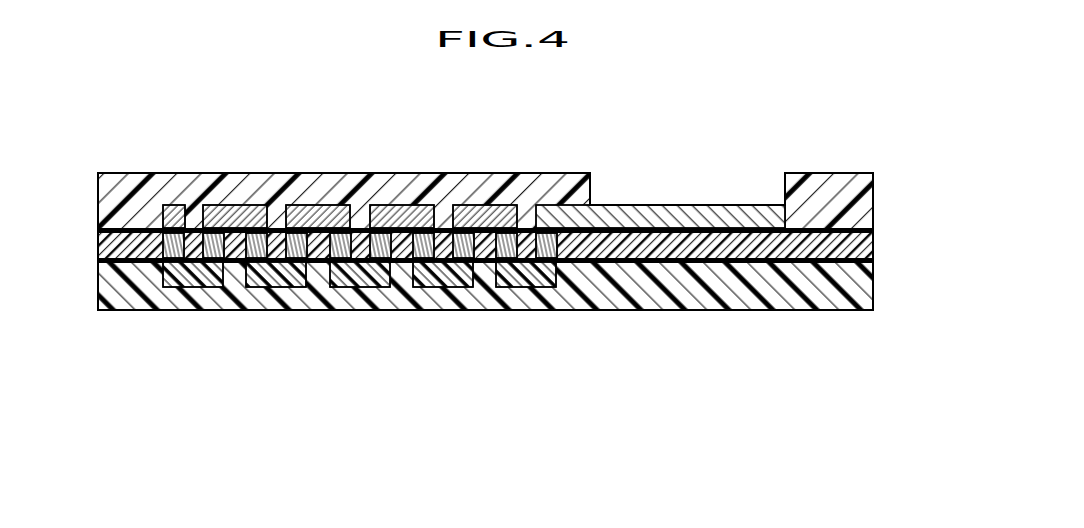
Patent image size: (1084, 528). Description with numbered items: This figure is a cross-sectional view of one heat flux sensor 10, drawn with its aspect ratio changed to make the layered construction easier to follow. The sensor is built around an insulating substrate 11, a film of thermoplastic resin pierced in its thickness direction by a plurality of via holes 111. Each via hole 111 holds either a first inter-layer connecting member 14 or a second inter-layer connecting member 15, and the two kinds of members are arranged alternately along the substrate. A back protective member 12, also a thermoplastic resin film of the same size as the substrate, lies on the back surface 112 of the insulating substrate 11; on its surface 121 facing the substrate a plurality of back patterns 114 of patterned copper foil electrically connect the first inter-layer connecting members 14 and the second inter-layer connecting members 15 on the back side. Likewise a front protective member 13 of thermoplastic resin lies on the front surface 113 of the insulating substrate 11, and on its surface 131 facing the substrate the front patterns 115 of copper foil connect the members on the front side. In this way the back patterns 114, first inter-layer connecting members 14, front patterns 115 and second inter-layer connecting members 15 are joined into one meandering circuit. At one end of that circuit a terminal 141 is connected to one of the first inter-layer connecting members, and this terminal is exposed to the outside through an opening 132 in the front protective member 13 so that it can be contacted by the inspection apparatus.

The heat flux sensor 10 is at (118, 154).
The insulating substrate 11 is at (830, 248).
The back protective member 12 is at (800, 288).
The front protective member 13 is at (827, 186).
The first inter-layer connecting member 14 is at (206, 275).
The second inter-layer connecting member 15 is at (170, 213).
The via hole 111 is at (212, 234).
The back surface 112 is at (650, 292).
The front surface 113 is at (622, 217).
The back pattern 114 is at (204, 287).
The front pattern 115 is at (168, 212).
The surface of back protective member 121 is at (810, 262).
The surface of front protective member 131 is at (830, 231).
The opening 132 is at (783, 198).
The terminal 141 is at (668, 217).